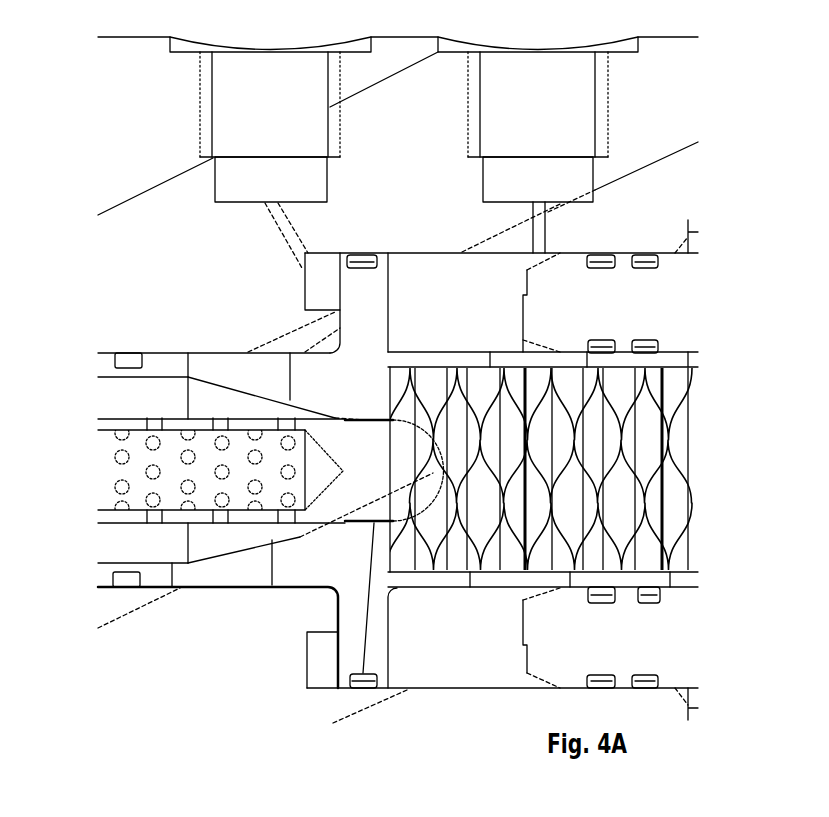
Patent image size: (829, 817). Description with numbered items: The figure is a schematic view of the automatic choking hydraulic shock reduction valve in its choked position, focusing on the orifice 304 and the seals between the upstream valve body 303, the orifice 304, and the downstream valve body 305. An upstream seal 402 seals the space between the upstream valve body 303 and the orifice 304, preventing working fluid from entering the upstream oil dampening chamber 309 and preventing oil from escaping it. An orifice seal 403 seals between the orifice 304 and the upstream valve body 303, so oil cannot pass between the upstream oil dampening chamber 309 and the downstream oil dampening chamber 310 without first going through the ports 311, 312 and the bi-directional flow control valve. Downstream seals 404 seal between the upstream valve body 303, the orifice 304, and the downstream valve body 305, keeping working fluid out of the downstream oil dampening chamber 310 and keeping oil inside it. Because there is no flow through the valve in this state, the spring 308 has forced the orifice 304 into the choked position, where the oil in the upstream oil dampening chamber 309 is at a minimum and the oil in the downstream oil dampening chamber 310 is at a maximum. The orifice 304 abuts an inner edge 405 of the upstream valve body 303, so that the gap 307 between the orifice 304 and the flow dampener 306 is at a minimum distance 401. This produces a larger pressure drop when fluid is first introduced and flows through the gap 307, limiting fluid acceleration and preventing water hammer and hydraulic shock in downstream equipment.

The upstream valve body 303 is at (398, 228).
The orifice 304 is at (265, 598).
The downstream valve body 305 is at (706, 470).
The flow dampener 306 is at (200, 470).
The gap 307 is at (394, 470).
The spring 308 is at (553, 469).
The upstream oil dampening chamber 309 is at (327, 288).
The downstream oil dampening chamber 310 is at (474, 470).
The port 311 is at (290, 229).
The port 312 is at (540, 227).
The minimum distance 401 is at (367, 422).
The upstream seal 402 is at (129, 364).
The orifice seal 403 is at (360, 270).
The downstream seals 404 is at (644, 269).
The inner edge 405 is at (333, 335).